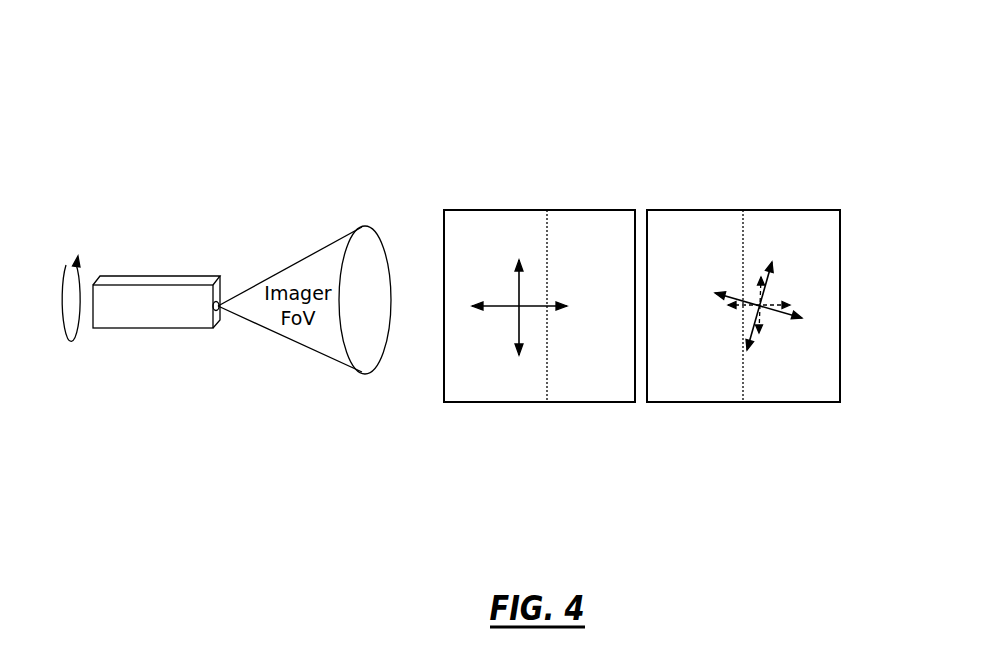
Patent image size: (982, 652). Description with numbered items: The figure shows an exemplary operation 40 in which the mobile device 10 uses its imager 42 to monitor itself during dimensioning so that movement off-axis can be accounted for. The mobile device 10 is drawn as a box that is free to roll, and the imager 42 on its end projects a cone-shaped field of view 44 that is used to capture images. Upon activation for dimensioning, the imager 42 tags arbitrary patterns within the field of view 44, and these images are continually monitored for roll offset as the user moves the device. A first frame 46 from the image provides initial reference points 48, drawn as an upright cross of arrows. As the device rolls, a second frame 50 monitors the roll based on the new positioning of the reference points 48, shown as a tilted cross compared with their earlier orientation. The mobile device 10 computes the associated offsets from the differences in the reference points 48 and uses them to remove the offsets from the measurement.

The mobile device 10 is at (145, 272).
The exemplary operation 40 is at (425, 92).
The imager 42 is at (222, 297).
The field of view 44 is at (313, 352).
The first frame 46 is at (508, 403).
The reference points 48 is at (528, 305).
The second frame 50 is at (750, 403).